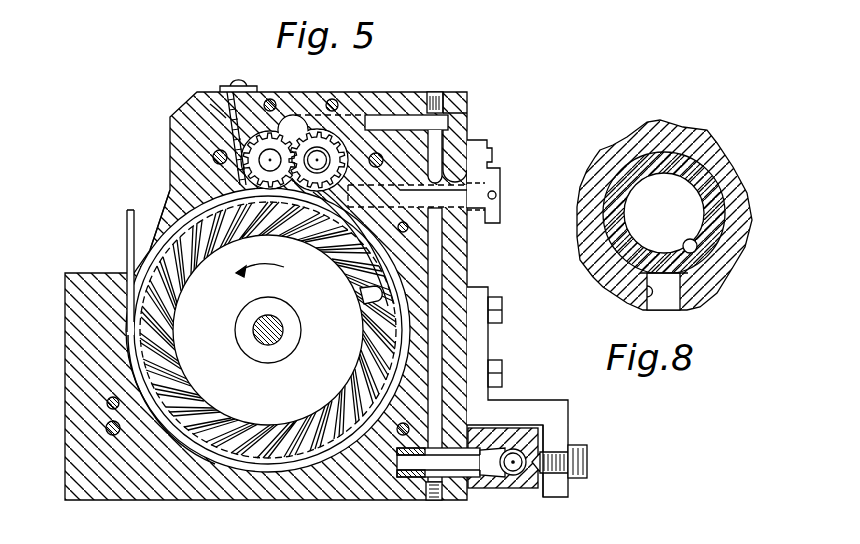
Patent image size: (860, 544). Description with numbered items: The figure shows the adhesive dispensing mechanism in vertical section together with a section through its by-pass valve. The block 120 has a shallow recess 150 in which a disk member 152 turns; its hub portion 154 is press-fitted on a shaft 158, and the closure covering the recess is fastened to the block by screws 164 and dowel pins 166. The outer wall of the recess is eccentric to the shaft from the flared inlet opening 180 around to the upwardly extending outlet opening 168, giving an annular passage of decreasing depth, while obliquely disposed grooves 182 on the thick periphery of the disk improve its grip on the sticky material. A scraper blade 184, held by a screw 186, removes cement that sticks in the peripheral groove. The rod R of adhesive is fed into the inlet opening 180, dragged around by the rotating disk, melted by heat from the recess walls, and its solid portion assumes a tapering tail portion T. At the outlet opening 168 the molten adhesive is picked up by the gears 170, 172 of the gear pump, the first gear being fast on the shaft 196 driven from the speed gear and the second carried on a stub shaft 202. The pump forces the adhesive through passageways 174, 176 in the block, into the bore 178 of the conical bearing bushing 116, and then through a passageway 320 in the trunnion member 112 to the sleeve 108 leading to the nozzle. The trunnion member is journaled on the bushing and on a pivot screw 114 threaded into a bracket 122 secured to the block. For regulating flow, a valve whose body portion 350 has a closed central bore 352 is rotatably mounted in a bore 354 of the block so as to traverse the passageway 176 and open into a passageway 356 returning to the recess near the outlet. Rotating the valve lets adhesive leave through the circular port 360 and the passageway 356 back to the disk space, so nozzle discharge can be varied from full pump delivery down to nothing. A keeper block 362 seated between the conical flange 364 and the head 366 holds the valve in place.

In FIG. 5, the sleeve 108 is at (522, 449).
In FIG. 5, the trunnion member 112 is at (522, 490).
In FIG. 5, the pivot screw 114 is at (588, 465).
In FIG. 5, the conical bearing bushing 116 is at (453, 488).
In FIG. 5, the block 120 is at (259, 499).
In FIG. 8, the block 120 is at (705, 130).
In FIG. 5, the bracket 122 is at (536, 401).
In FIG. 5, the shallow recess 150 is at (291, 464).
In FIG. 5, the disk member 152 is at (268, 330).
In FIG. 5, the hub portion 154 is at (283, 358).
In FIG. 5, the shaft 158 is at (253, 331).
In FIG. 5, the screws 164 is at (213, 156).
In FIG. 5, the dowel pins 166 is at (330, 101).
In FIG. 5, the outlet opening 168 is at (276, 232).
In FIG. 5, the gear 170 is at (259, 140).
In FIG. 5, the gear 172 is at (343, 150).
In FIG. 5, the passageway 174 is at (415, 118).
In FIG. 5, the passageway 176 is at (434, 260).
In FIG. 5, the bore 178 is at (477, 474).
In FIG. 5, the inlet opening 180 is at (115, 281).
In FIG. 5, the obliquely disposed grooves 182 is at (361, 291).
In FIG. 5, the scraper blade 184 is at (210, 104).
In FIG. 5, the screw 186 is at (232, 78).
In FIG. 5, the shaft 196 is at (215, 183).
In FIG. 5, the stub shaft 202 is at (331, 140).
In FIG. 5, the passageway 320 is at (497, 466).
In FIG. 5, the body portion of valve 350 is at (456, 152).
In FIG. 8, the body portion of valve 350 is at (718, 238).
In FIG. 8, the central bore 352 is at (703, 248).
In FIG. 5, the bore 354 is at (418, 180).
In FIG. 5, the passageway 356 is at (334, 252).
In FIG. 8, the passageway 356 is at (648, 305).
In FIG. 8, the circular port 360 is at (620, 264).
In FIG. 5, the keeper block 362 is at (488, 146).
In FIG. 5, the conical flange 364 is at (490, 216).
In FIG. 5, the head 366 is at (501, 185).
In FIG. 5, the rod of adhesive R is at (127, 238).
In FIG. 5, the tail portion T is at (196, 448).